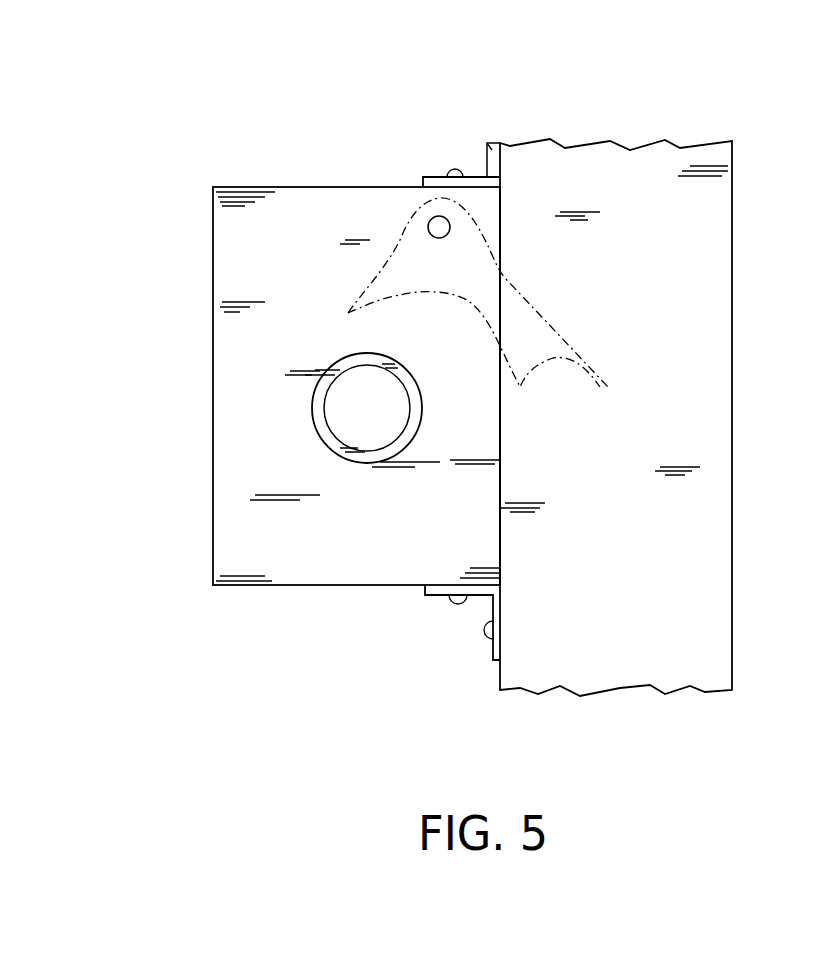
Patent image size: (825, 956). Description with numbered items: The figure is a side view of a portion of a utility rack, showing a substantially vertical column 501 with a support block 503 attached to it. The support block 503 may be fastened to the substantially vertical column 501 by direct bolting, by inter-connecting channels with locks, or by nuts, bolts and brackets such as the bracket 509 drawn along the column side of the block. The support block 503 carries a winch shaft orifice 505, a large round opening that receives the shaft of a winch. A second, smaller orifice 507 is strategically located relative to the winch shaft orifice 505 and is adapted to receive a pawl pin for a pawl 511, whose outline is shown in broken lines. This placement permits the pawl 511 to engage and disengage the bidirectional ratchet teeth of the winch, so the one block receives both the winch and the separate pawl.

The substantially vertical column 501 is at (715, 582).
The support block 503 is at (226, 420).
The winch shaft orifice 505 is at (388, 413).
The orifice 507 is at (427, 220).
The bracket 509 is at (430, 598).
The pawl 511 is at (563, 333).